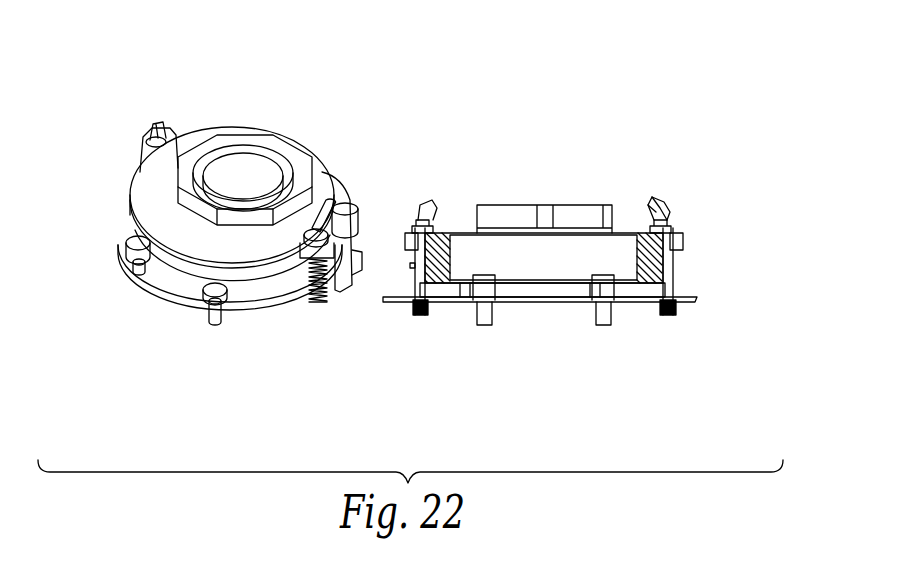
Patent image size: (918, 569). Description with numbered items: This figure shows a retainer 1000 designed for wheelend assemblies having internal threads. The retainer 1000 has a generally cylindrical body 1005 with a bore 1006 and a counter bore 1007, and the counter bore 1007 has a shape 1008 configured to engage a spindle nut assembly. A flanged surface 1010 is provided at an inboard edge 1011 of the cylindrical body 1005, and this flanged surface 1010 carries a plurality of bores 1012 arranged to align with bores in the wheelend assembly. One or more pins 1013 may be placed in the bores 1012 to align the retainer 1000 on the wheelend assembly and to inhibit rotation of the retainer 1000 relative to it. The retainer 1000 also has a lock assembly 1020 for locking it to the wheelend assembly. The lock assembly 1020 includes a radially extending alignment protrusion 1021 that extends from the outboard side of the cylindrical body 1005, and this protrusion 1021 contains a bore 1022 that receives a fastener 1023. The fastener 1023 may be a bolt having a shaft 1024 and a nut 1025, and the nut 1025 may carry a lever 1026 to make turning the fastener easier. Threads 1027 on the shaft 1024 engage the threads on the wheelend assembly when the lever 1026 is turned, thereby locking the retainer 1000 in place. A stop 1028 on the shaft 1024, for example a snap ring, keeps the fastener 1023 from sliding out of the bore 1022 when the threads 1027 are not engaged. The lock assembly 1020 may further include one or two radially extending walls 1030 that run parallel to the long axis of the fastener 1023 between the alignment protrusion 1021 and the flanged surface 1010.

The retainer 1000 is at (122, 102).
The cylindrical body 1005 is at (140, 218).
The bore 1006 is at (247, 147).
The counter bore 1007 is at (218, 148).
The shape 1008 is at (283, 153).
The flanged surface 1010 is at (260, 300).
The inboard edge 1011 is at (196, 284).
The bores 1012 is at (140, 265).
The pins 1013 is at (218, 325).
The lock assembly 1020 is at (700, 228).
The radially extending alignment protrusion 1021 is at (343, 207).
The bore 1022 is at (318, 172).
The fastener 1023 is at (663, 313).
The shaft 1024 is at (674, 290).
The nut 1025 is at (660, 203).
The lever 1026 is at (650, 202).
The threads 1027 is at (322, 302).
The stop 1028 is at (680, 235).
The radially extending walls 1030 is at (438, 240).